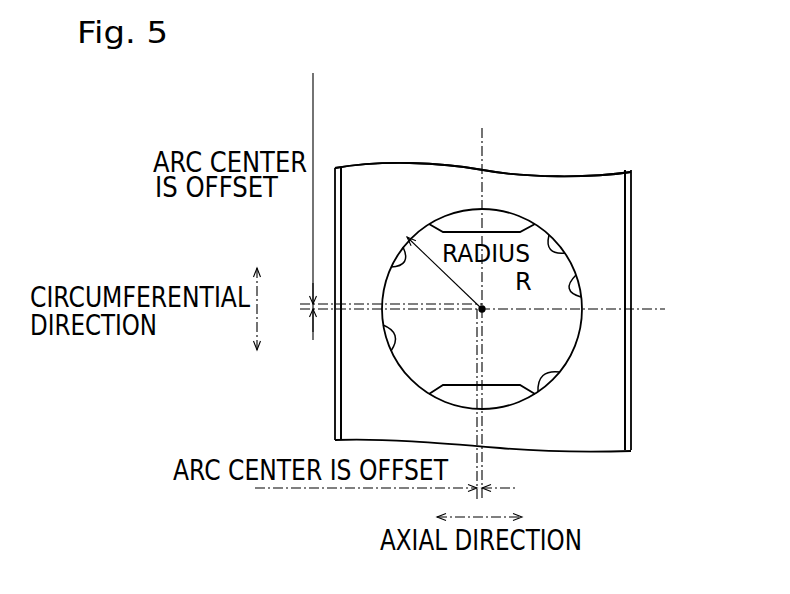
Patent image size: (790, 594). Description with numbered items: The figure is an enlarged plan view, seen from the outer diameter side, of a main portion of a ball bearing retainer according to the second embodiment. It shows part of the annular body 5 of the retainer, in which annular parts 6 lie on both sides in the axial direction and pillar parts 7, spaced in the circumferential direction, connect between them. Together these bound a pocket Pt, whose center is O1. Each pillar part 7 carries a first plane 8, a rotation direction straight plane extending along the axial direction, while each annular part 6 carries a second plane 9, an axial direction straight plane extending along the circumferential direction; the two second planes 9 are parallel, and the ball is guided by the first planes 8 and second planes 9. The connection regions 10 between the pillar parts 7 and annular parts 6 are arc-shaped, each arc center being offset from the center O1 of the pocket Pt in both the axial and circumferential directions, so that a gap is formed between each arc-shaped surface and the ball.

The annular body 5 is at (631, 222).
The annular part 6 is at (360, 333).
The pillar part 7 is at (498, 188).
The first plane 8 is at (463, 224).
The second plane 9 is at (390, 352).
The connection region 10 is at (398, 255).
The pocket Pt is at (562, 348).
The center of the pocket O1 is at (482, 309).